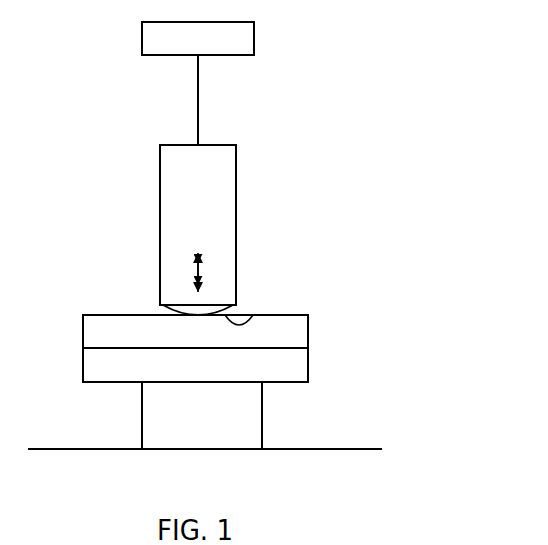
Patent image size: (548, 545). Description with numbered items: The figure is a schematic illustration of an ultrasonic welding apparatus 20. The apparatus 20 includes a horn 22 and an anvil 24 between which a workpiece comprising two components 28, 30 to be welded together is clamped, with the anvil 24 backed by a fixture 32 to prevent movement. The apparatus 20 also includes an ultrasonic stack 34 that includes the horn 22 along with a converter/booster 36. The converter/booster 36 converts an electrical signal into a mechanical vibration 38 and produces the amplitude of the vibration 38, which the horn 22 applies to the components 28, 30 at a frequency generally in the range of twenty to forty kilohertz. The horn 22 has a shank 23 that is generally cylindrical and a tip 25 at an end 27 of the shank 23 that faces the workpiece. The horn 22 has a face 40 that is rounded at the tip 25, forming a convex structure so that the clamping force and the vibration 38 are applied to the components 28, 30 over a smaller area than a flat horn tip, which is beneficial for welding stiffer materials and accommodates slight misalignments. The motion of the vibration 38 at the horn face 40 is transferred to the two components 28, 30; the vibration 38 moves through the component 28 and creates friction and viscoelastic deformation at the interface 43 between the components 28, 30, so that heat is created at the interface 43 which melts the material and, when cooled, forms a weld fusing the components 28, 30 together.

The welding apparatus 20 is at (312, 128).
The horn 22 is at (246, 207).
The shank 23 is at (160, 185).
The anvil 24 is at (262, 400).
The tip 25 is at (160, 308).
The end 27 is at (187, 316).
The component 28 is at (308, 332).
The component 30 is at (308, 363).
The fixture 32 is at (345, 449).
The ultrasonic stack 34 is at (130, 144).
The converter/booster 36 is at (254, 37).
The vibration 38 is at (191, 275).
The face 40 is at (247, 315).
The interface 43 is at (137, 353).